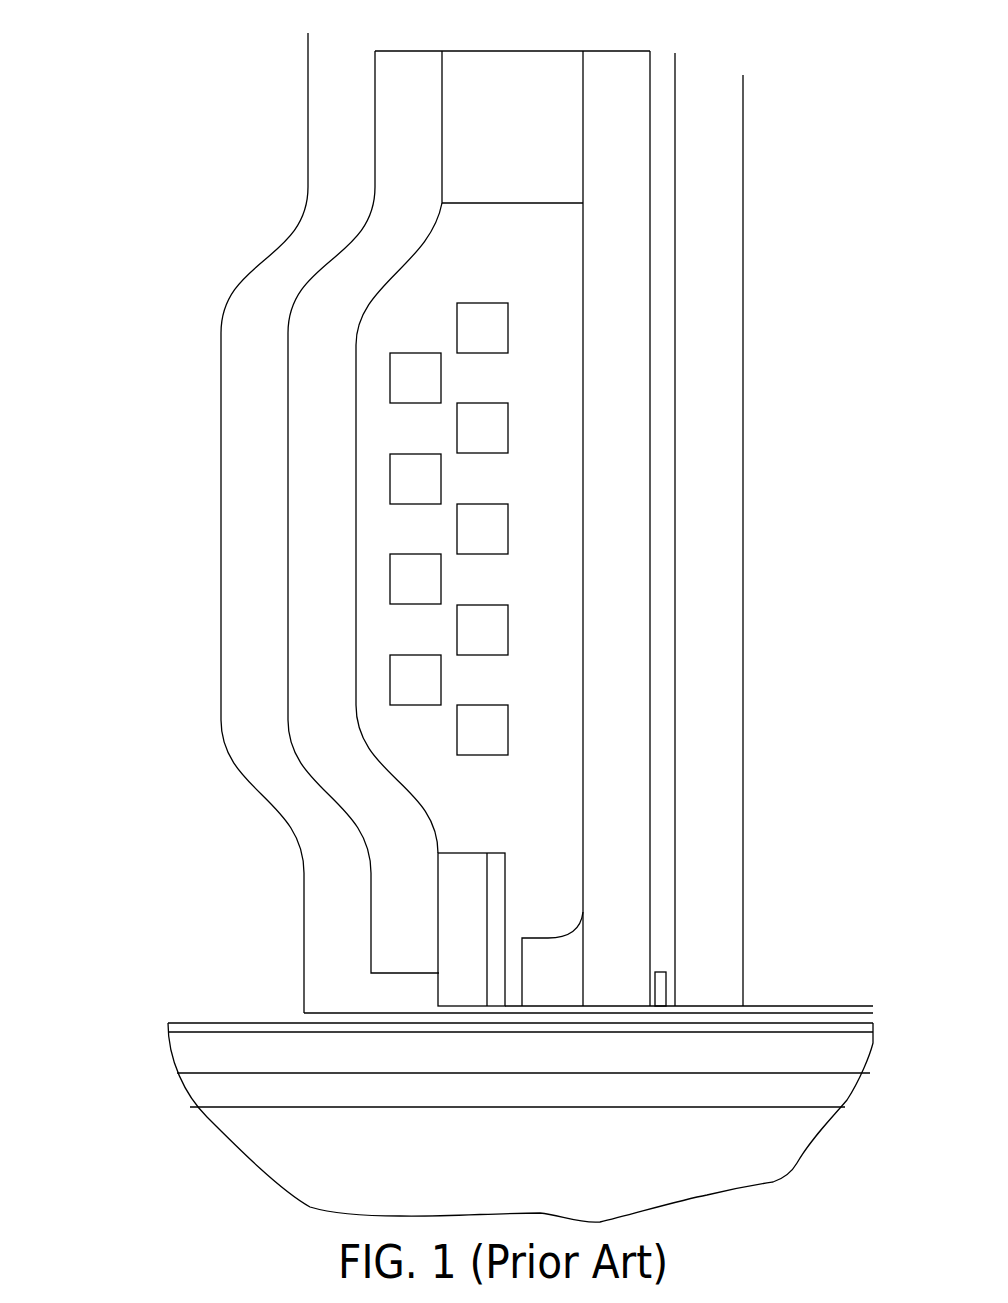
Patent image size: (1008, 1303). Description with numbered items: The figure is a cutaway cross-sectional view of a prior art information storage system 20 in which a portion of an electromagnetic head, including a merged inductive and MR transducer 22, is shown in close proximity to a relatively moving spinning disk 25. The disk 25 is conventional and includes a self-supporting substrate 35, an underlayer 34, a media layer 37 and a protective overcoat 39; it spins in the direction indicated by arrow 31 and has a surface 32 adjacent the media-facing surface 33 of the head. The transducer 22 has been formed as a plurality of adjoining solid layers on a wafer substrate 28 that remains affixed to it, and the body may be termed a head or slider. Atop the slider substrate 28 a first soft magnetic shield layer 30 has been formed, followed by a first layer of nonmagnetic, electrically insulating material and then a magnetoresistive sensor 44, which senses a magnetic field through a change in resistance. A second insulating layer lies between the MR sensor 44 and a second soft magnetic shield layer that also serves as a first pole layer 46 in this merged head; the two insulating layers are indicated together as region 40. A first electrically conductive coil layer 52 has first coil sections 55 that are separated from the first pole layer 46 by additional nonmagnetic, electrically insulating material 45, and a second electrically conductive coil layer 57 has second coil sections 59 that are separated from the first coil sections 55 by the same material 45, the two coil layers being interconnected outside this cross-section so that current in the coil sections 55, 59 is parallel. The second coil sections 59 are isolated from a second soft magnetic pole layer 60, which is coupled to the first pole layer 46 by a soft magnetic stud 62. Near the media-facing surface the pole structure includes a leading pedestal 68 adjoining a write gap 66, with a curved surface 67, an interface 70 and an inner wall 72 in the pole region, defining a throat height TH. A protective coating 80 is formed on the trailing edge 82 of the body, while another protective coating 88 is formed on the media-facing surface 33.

The information storage system 20 is at (150, 57).
The merged inductive and MR transducer 22 is at (142, 622).
The spinning disk 25 is at (142, 1107).
The wafer substrate 28 is at (807, 538).
The first soft magnetic shield layer 30 is at (692, 652).
The arrow 31 is at (388, 1124).
The disk surface 32 is at (202, 1013).
The media-facing surface 33 is at (353, 1023).
The underlayer 34 is at (672, 1097).
The self-supporting substrate 35 is at (506, 1187).
The media layer 37 is at (455, 1065).
The protective overcoat 39 is at (770, 1032).
The nonmagnetic electrically insulating region 40 is at (675, 320).
The magnetoresistive (MR) sensor 44 is at (666, 990).
The nonmagnetic electrically insulating material 45 is at (524, 602).
The first pole layer 46 is at (599, 652).
The first electrically conductive coil layer 52 is at (483, 292).
The first coil sections 55 is at (508, 327).
The second electrically conductive coil layer 57 is at (415, 342).
The second coil sections 59 is at (390, 478).
The second soft magnetic pole layer 60 is at (306, 736).
The soft magnetic stud 62 is at (491, 131).
The step structure 66 is at (548, 938).
The curved surface 67 is at (576, 933).
The lower block 68 is at (491, 853).
The interface 70 is at (513, 1025).
The inner wall 72 is at (497, 906).
The protective coating 80 is at (239, 569).
The trailing edge 82 is at (211, 470).
The protective coating 88 is at (808, 1006).
The thickness TH is at (505, 938).